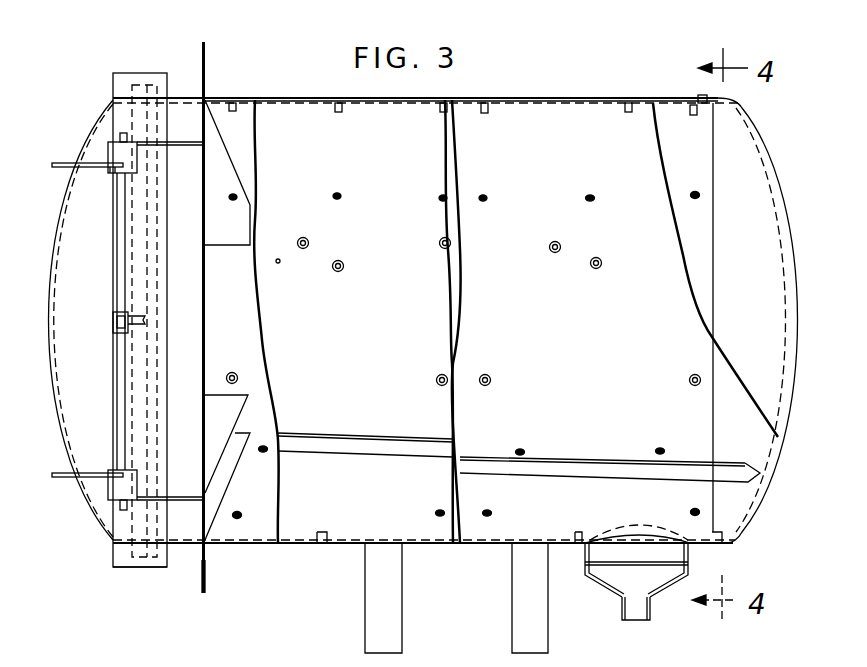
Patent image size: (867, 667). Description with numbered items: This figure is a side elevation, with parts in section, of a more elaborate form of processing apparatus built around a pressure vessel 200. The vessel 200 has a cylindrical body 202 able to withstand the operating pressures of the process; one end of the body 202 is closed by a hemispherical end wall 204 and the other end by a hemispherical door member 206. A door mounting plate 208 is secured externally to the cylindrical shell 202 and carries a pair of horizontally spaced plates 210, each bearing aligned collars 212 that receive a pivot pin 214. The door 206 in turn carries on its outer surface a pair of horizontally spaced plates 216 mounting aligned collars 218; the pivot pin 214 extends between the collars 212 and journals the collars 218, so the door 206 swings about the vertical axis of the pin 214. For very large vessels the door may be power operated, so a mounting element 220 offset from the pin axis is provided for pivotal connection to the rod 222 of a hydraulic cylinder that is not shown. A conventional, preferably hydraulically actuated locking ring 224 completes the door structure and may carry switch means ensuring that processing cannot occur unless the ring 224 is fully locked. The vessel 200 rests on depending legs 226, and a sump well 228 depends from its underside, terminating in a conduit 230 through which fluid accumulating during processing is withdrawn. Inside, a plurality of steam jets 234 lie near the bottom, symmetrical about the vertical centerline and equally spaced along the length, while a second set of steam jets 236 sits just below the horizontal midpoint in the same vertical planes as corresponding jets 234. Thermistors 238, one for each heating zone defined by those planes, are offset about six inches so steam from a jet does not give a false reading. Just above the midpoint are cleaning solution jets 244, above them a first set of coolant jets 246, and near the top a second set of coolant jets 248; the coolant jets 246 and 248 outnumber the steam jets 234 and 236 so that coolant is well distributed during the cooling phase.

The pressure vessel 200 is at (491, 99).
The cylindrical body 202 is at (346, 548).
The hemispherical end wall 204 is at (764, 171).
The hemispherical door member 206 is at (97, 500).
The door mounting plate 208 is at (207, 587).
The horizontally spaced plates 210 is at (198, 140).
The aligned collars 212 is at (108, 153).
The pivot pin 214 is at (118, 254).
The horizontally spaced plates 216 is at (66, 160).
The aligned collars 218 is at (118, 178).
The mounting element 220 is at (114, 336).
The rod 222 is at (137, 326).
The locking ring 224 is at (128, 567).
The depending legs 226 is at (512, 645).
The sump well 228 is at (606, 596).
The conduit 230 is at (652, 614).
The steam jets 234 is at (243, 513).
The steam jets 236 is at (238, 378).
The thermistors 238 is at (272, 433).
The cleaning solution jets 244 is at (340, 270).
The coolant jets 246 is at (234, 195).
The coolant jets 248 is at (337, 115).